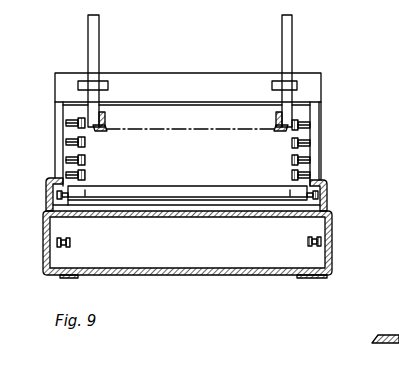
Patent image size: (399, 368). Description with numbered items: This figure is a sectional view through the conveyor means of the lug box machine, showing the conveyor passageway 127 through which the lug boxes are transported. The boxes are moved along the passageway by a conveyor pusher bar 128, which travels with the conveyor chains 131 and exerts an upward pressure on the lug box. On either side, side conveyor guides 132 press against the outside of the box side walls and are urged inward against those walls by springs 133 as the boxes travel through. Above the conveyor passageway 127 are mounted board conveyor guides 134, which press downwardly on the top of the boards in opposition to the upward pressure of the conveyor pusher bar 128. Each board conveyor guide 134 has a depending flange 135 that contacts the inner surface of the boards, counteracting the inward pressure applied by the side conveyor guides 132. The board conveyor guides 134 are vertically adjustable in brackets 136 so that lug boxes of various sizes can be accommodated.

The conveyor passageway 127 is at (188, 129).
The conveyor pusher bar 128 is at (236, 192).
The conveyor chain 131 is at (330, 218).
The side conveyor guide 132 is at (85, 145).
The spring 133 is at (66, 142).
The board conveyor guide 134 is at (105, 118).
The depending flange 135 is at (105, 127).
The bracket 136 is at (292, 88).